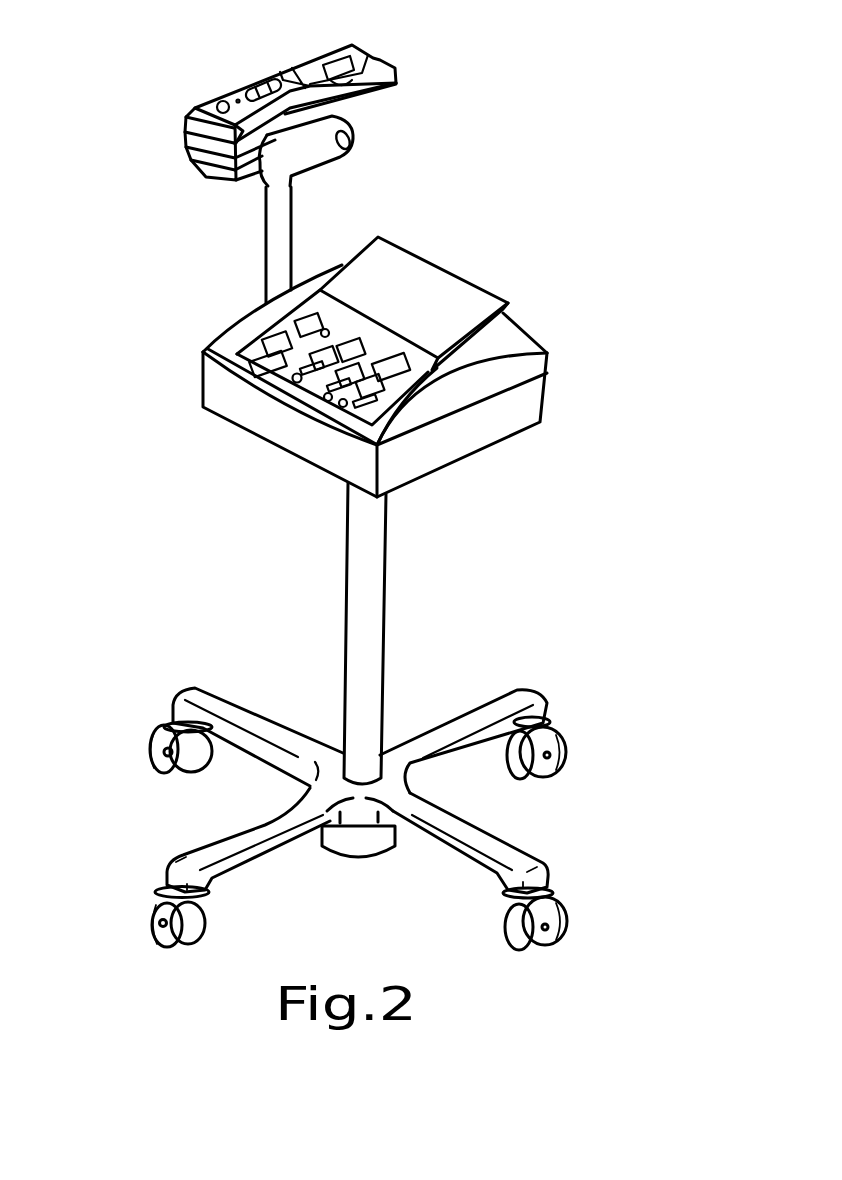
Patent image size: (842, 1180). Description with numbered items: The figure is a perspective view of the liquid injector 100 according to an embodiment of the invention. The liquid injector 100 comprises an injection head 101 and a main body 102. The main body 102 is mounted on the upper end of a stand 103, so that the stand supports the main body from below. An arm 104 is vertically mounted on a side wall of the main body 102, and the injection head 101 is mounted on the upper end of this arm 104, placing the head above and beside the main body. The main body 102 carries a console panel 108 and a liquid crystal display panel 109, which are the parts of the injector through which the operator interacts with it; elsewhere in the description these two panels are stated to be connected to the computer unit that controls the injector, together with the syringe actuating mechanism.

The liquid injector 100 is at (502, 96).
The injection head 101 is at (184, 142).
The main body 102 is at (536, 403).
The stand 103 is at (272, 262).
The arm 104 is at (373, 642).
The console panel 108 is at (243, 350).
The liquid crystal display panel 109 is at (468, 292).